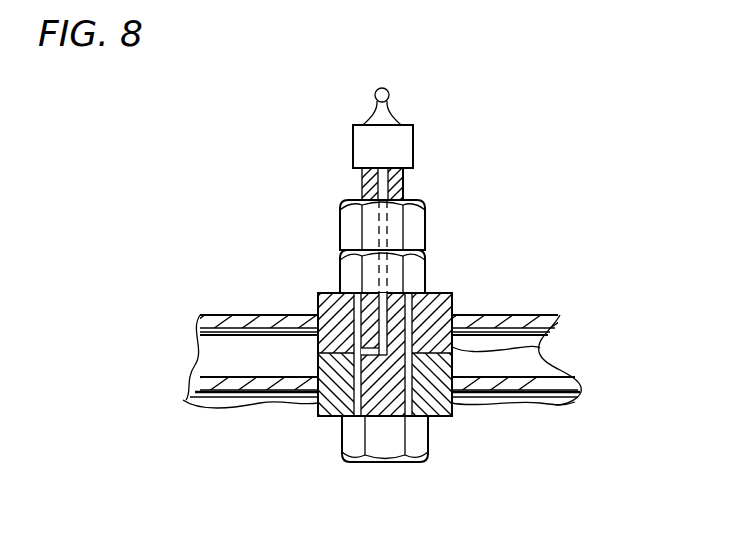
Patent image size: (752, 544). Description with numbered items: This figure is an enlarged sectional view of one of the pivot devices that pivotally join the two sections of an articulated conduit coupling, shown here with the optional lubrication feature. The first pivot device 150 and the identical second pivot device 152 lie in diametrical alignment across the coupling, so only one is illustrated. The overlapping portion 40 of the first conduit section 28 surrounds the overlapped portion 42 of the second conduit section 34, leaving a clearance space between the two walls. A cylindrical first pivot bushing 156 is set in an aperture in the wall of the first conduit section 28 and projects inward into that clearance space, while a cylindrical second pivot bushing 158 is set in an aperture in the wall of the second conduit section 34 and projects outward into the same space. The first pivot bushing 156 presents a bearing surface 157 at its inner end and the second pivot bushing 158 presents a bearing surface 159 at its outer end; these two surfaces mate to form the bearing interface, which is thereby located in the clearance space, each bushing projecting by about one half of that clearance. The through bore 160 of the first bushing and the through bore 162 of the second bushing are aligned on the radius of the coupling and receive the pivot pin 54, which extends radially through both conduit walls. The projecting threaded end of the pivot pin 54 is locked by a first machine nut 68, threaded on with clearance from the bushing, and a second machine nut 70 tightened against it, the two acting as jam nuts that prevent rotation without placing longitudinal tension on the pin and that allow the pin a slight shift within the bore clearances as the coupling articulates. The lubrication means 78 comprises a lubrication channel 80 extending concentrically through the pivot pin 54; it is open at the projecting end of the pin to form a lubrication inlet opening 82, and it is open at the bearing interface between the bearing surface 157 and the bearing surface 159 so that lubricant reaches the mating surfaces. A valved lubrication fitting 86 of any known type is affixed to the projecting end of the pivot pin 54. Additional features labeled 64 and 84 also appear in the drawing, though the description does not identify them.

The first conduit section 28 is at (214, 313).
The second conduit section 34 is at (240, 405).
The overlapping portion 40 is at (544, 312).
The overlapped portion 42 is at (553, 395).
The pivot pin 54 is at (403, 190).
The bolt head 64 is at (415, 443).
The first machine nut 68 is at (340, 270).
The second machine nut 70 is at (340, 220).
The lubrication means 78 is at (428, 135).
The lubrication channel 80 is at (383, 185).
The lubrication inlet opening 82 is at (384, 167).
The transverse passage 84 is at (362, 352).
The lubrication fitting 86 is at (392, 118).
The first pivot device 150 is at (415, 288).
The second pivot device 152 is at (415, 288).
The first pivot bushing 156 is at (452, 294).
The bearing surface 157 is at (348, 354).
The second pivot bushing 158 is at (452, 404).
The bearing surface 159 is at (540, 348).
The through bore 160 is at (432, 293).
The through bore 162 is at (353, 425).